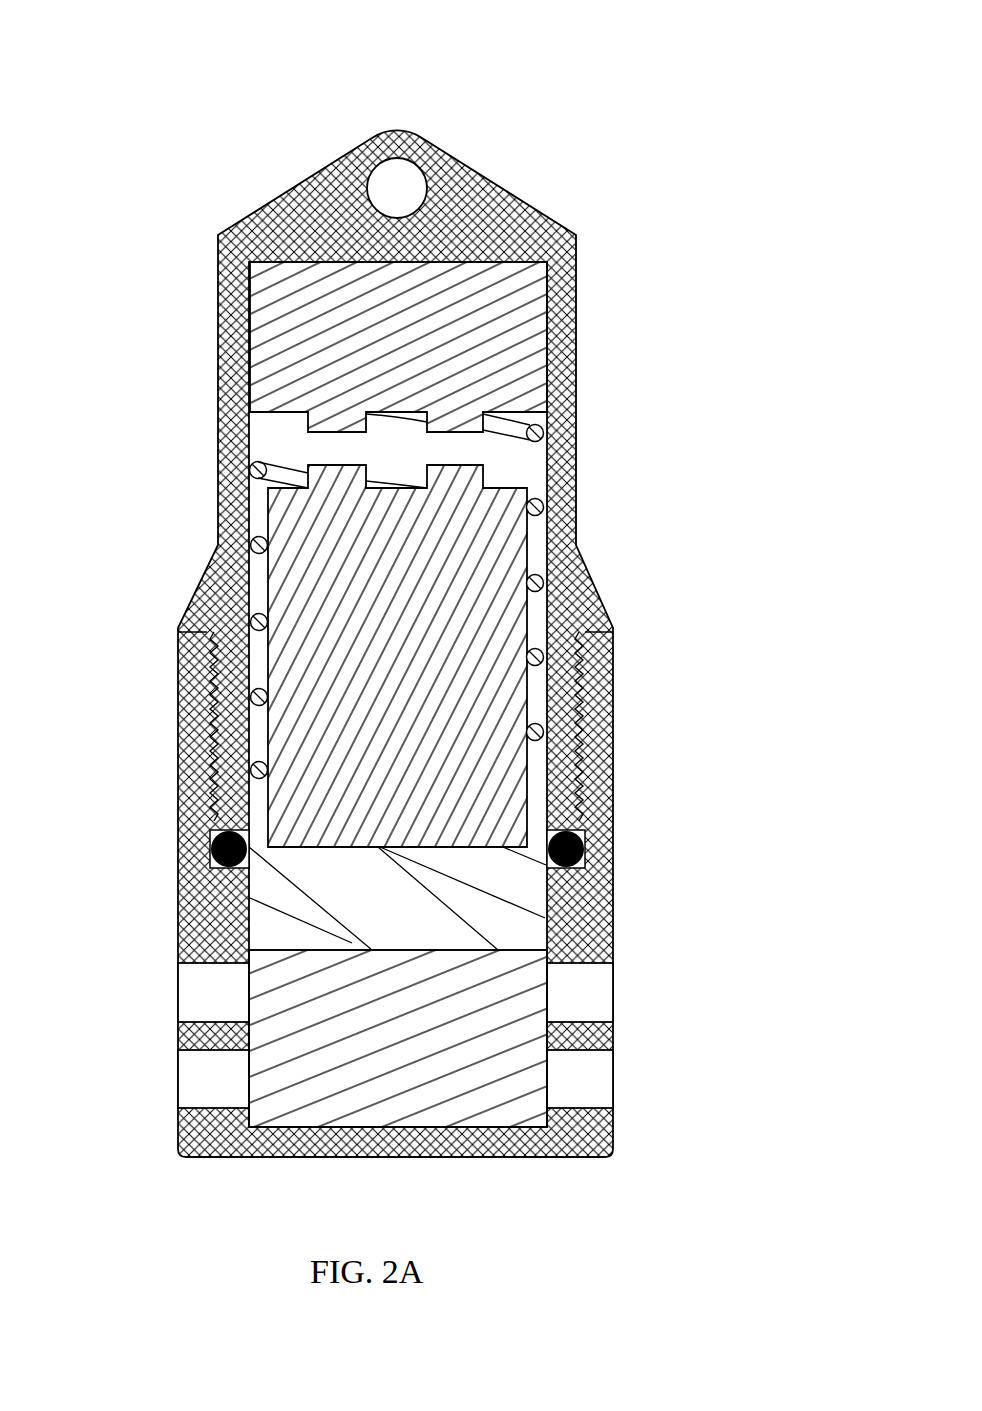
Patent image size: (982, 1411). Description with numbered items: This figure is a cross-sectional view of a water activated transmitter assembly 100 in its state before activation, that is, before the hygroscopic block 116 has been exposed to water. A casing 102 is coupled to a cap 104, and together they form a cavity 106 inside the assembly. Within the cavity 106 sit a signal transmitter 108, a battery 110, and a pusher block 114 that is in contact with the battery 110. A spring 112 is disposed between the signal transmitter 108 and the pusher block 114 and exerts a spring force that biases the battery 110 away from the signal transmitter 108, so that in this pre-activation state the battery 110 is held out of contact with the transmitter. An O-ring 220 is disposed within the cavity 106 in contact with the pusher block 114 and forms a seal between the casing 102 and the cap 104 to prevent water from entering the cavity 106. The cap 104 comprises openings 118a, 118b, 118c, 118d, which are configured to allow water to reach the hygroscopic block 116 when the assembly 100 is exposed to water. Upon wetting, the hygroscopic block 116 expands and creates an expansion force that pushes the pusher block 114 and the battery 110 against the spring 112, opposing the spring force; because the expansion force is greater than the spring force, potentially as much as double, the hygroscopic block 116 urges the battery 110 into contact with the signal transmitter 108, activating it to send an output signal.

The water activated transmitter assembly 100 is at (398, 607).
The casing 102 is at (485, 212).
The cap 104 is at (177, 880).
The cavity 106 is at (258, 442).
The signal transmitter 108 is at (538, 277).
The battery 110 is at (518, 617).
The spring 112 is at (537, 497).
The pusher block 114 is at (537, 910).
The hygroscopic block 116 is at (500, 1113).
The opening 118a is at (177, 997).
The opening 118b is at (177, 1093).
The opening 118c is at (615, 1007).
The opening 118d is at (615, 1092).
The O-ring 220 is at (585, 842).